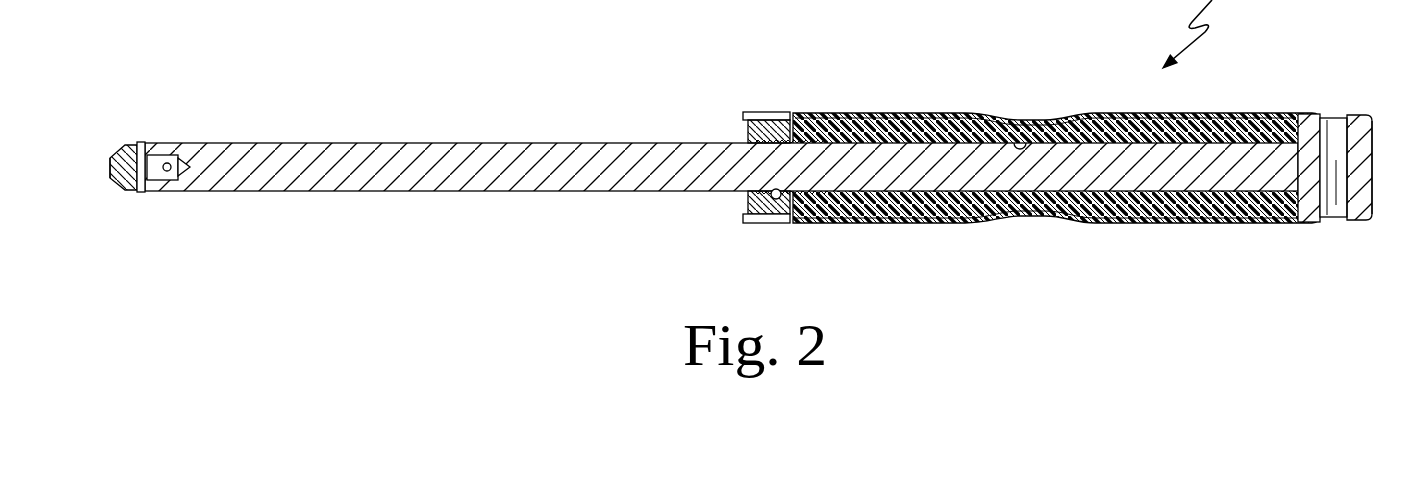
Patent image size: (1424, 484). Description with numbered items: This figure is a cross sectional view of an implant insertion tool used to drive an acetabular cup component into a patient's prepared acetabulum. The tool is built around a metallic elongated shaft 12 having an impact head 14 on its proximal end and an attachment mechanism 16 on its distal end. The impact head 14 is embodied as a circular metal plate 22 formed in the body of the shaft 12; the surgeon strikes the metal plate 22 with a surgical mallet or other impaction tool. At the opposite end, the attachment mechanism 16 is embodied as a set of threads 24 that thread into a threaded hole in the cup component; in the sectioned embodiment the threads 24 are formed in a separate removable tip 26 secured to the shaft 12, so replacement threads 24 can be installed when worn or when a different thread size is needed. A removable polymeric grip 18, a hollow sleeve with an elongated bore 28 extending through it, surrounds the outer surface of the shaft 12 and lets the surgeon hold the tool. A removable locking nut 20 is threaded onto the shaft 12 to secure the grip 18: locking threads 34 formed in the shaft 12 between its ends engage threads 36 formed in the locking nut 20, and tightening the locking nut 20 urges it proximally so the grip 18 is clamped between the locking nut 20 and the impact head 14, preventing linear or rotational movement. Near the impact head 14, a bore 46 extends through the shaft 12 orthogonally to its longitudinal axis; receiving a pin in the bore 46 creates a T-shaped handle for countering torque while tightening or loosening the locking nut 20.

The elongated shaft 12 is at (557, 143).
The impact head 14 is at (1363, 156).
The attachment mechanism 16 is at (121, 186).
The grip 18 is at (915, 118).
The locking nut 20 is at (762, 122).
The metal plate 22 is at (1363, 188).
The threads 24 is at (113, 150).
The removable tip 26 is at (112, 172).
The elongated bore 28 is at (1020, 140).
The locking threads 34 is at (807, 122).
The threads 36 is at (777, 200).
The bore 46 is at (1343, 140).